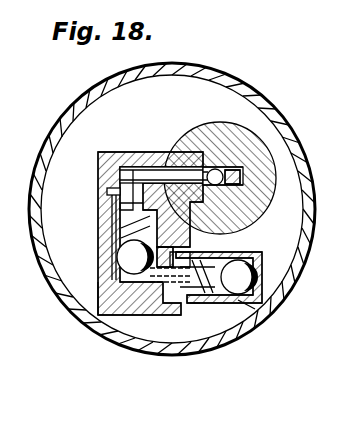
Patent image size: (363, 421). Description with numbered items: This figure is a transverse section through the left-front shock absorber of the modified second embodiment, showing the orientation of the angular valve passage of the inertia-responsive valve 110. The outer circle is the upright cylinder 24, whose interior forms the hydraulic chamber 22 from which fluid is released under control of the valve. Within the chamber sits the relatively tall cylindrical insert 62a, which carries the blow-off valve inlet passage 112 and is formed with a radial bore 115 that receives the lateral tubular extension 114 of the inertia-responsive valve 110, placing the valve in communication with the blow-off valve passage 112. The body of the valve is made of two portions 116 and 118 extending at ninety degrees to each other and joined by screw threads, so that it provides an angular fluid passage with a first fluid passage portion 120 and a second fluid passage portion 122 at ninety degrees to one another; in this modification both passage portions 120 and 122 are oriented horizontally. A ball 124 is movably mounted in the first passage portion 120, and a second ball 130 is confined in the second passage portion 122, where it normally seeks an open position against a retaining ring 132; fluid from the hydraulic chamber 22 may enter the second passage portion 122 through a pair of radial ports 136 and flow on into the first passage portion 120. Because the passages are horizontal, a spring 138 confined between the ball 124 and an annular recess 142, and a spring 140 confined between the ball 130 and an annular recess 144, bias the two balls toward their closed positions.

The hydraulic chamber 22 is at (206, 94).
The upright cylinder 24 is at (253, 101).
The cylindrical insert 62a is at (227, 125).
The inertia-responsive valve 110 is at (104, 152).
The blow-off valve inlet passage 112 is at (224, 178).
The lateral tubular extension 114 is at (160, 152).
The radial bore 115 is at (172, 152).
The valve body portion 116 is at (88, 290).
The valve body portion 118 is at (250, 311).
The first fluid passage portion 120 is at (120, 233).
The second fluid passage portion 122 is at (205, 253).
The ball 124 is at (122, 256).
The second ball 130 is at (262, 268).
The retaining ring 132 is at (276, 300).
The radial ports 136 is at (194, 305).
The spring 138 is at (118, 221).
The spring 140 is at (209, 300).
The annular recess 142 is at (107, 194).
The annular recess 144 is at (173, 305).